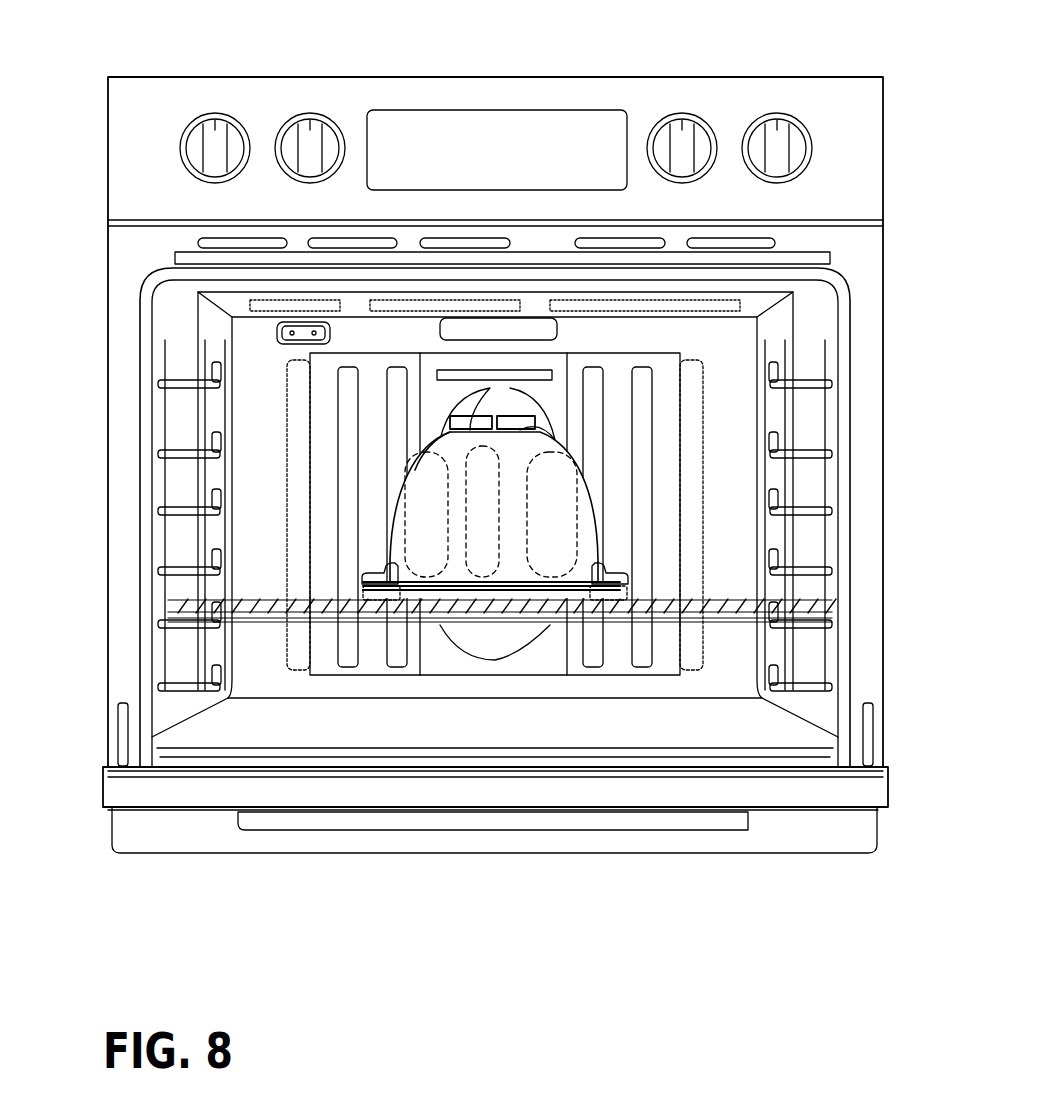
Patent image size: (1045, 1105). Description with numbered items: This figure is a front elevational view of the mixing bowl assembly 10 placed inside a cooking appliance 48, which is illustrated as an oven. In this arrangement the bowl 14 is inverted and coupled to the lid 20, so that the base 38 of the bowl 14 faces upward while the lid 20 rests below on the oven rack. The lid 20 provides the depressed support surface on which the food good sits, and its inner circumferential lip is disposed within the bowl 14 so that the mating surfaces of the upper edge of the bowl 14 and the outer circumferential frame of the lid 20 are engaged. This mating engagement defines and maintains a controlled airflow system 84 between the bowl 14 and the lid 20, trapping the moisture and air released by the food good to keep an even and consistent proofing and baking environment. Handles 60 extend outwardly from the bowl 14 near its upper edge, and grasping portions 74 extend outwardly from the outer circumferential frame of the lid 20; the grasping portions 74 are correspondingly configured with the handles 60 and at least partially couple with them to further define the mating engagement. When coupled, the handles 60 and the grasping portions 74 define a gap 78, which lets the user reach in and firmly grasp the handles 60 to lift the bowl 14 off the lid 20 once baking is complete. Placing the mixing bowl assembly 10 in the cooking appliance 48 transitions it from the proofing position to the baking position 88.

The mixing bowl assembly 10 is at (543, 390).
The cooking appliance 48 is at (820, 100).
The bowl 14 is at (540, 490).
The baking position 88 is at (422, 460).
The controlled airflow system 84 is at (406, 500).
The base 38 is at (512, 416).
The lid 20 is at (447, 600).
The handles 60 is at (372, 573).
The grasping portions 74 is at (385, 597).
The gap 78 is at (370, 585).